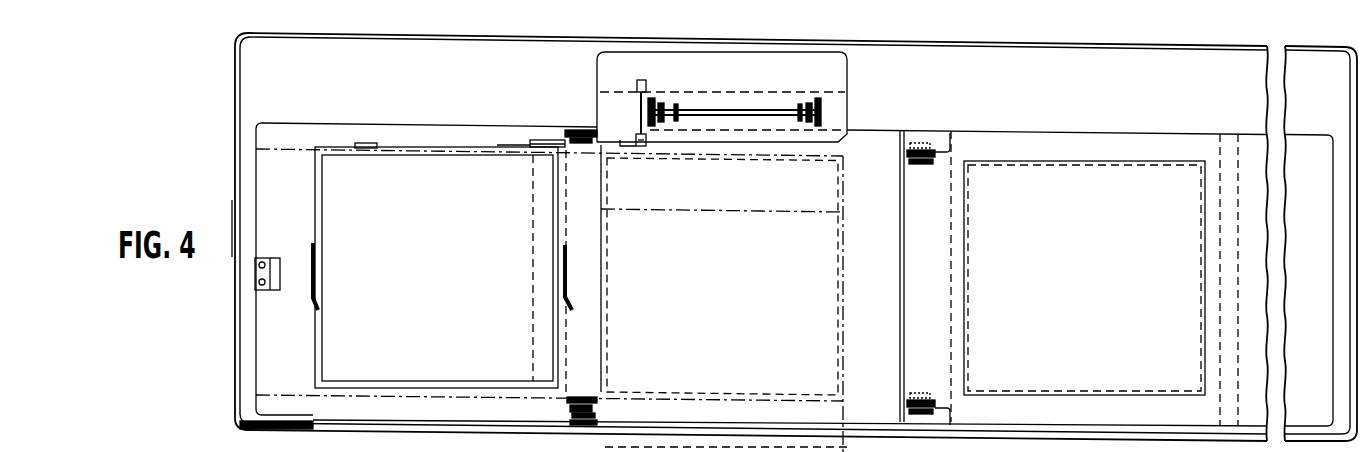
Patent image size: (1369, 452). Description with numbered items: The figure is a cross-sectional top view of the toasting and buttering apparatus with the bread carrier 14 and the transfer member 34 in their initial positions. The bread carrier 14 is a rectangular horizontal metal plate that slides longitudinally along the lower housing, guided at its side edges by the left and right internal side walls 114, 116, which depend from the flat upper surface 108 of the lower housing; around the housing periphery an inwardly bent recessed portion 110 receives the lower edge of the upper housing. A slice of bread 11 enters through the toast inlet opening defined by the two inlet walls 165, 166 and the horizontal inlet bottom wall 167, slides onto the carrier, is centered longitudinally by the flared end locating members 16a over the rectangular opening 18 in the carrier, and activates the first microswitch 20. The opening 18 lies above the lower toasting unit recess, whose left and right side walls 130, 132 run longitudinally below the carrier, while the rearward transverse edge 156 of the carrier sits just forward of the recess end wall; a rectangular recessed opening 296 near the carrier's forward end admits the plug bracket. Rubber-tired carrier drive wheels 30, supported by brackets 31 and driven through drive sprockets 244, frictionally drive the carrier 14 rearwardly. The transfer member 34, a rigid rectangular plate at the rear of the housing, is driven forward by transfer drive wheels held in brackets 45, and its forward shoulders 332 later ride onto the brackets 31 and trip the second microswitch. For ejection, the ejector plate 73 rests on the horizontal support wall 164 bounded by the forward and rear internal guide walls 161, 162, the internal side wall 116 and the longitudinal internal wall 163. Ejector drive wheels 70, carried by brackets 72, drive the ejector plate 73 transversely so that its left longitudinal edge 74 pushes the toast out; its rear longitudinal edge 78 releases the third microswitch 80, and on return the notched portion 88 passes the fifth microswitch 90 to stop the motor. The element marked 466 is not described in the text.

The upper surface 108 is at (252, 58).
The recessed portion 110 is at (240, 427).
The bread carrier 14 is at (295, 128).
The right internal side wall 116 is at (368, 124).
The inlet wall 166 is at (373, 140).
The rectangular opening 18 is at (455, 165).
The first microswitch 20 is at (538, 139).
The carrier drive wheels 30 is at (565, 130).
The brackets 31 is at (582, 144).
The forward internal guide wall 161 is at (597, 72).
The third microswitch 80 is at (639, 81).
The ejector drive wheels 70 is at (656, 108).
The longitudinal internal wall 163 is at (740, 54).
The rear longitudinal edge 78 is at (750, 92).
The support wall 164 is at (840, 68).
The rear internal guide wall 162 is at (847, 88).
The ejector plate 73 is at (838, 110).
The transfer member 34 is at (1090, 140).
The shoulders 332 is at (950, 150).
The right side wall of recess 132 is at (302, 150).
The left side wall of recess 130 is at (302, 393).
The notched portion 88 is at (627, 148).
The fifth microswitch 90 is at (641, 146).
The brackets 72 is at (670, 130).
The left longitudinal edge 74 is at (718, 141).
The slice of bread 11 is at (766, 208).
The brackets 45 is at (928, 160).
The rectangular recessed opening 296 is at (272, 258).
The end locating members 16a is at (317, 263).
The rearward transverse edge 156 is at (601, 242).
The left internal side wall 114 is at (305, 415).
The inlet wall 165 is at (311, 429).
The inlet bottom wall 167 is at (379, 423).
The drive sprocket 244 is at (600, 420).
The bottom guide 466 is at (585, 440).